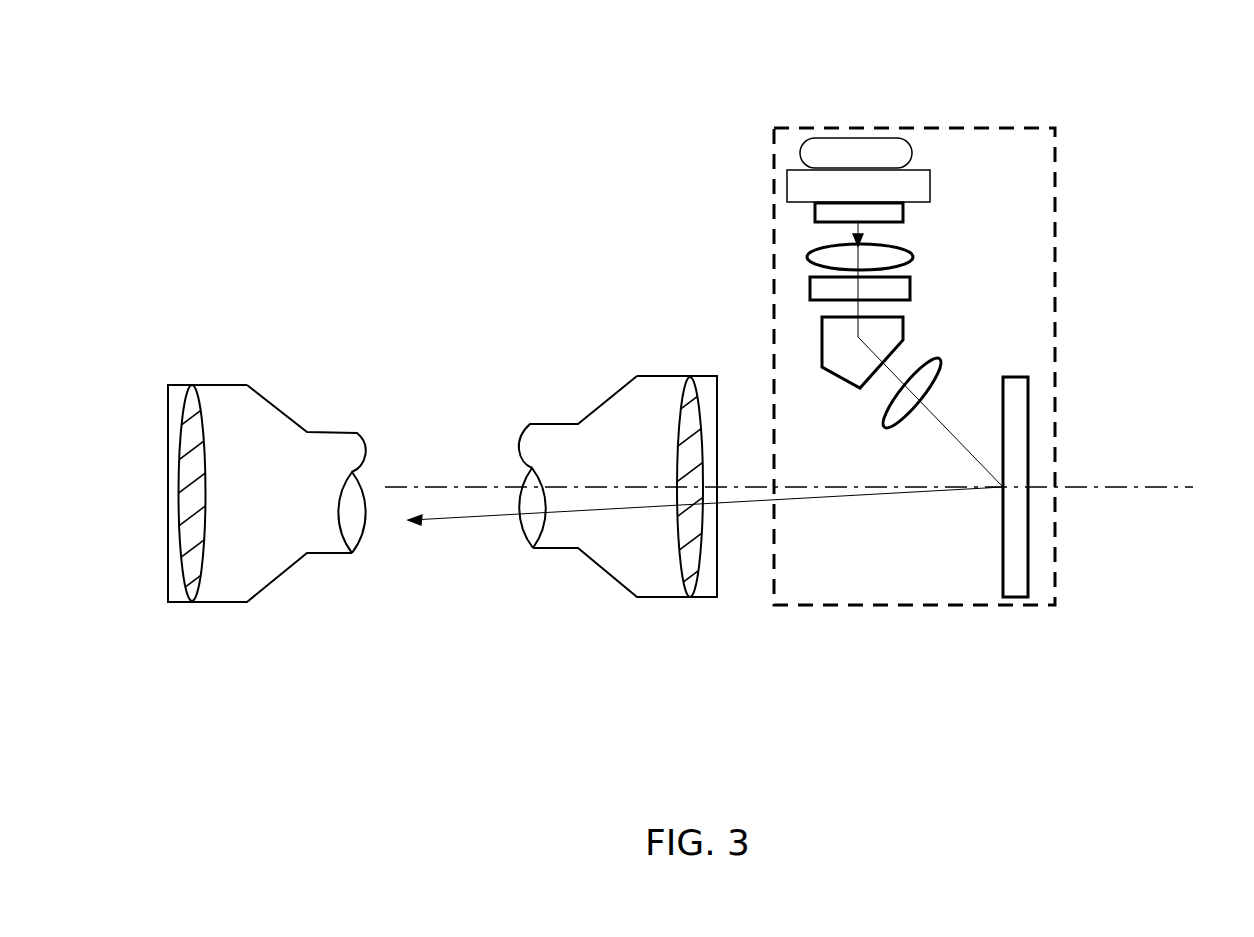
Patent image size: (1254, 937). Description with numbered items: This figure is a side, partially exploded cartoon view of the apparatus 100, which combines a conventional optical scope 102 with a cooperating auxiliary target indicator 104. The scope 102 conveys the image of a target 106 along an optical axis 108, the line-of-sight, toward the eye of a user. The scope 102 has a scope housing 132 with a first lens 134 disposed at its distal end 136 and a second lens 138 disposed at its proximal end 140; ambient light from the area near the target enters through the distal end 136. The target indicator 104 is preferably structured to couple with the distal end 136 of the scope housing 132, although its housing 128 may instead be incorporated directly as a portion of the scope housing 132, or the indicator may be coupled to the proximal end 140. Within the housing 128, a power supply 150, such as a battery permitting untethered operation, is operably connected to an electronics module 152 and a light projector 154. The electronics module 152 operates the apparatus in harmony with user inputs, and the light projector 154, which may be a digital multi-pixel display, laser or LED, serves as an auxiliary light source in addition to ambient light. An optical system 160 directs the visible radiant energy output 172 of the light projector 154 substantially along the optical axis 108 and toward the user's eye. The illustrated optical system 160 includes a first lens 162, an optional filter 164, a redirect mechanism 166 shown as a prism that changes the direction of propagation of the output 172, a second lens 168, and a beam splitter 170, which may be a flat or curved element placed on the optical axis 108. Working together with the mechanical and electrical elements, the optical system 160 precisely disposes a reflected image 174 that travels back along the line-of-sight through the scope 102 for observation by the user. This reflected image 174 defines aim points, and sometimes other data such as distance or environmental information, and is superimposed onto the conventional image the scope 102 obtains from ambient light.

The apparatus 100 is at (906, 70).
The optical scope 102 is at (543, 437).
The target indicator 104 is at (1117, 103).
The target 106 is at (1200, 478).
The optical axis 108 is at (442, 487).
The housing 128 is at (965, 607).
The scope housing 132 is at (560, 535).
The first lens 134 is at (688, 457).
The distal end 136 is at (618, 458).
The second lens 138 is at (197, 462).
The proximal end 140 is at (267, 535).
The power supply 150 is at (898, 152).
The electronics module 152 is at (913, 192).
The light projector 154 is at (828, 212).
The optical system 160 is at (907, 339).
The first lens 162 is at (890, 257).
The filter 164 is at (895, 293).
The redirect mechanism 166 is at (843, 347).
The second lens 168 is at (897, 407).
The beam splitter 170 is at (1012, 535).
The visible radiant energy output 172 is at (853, 228).
The reflected image 174 is at (470, 519).